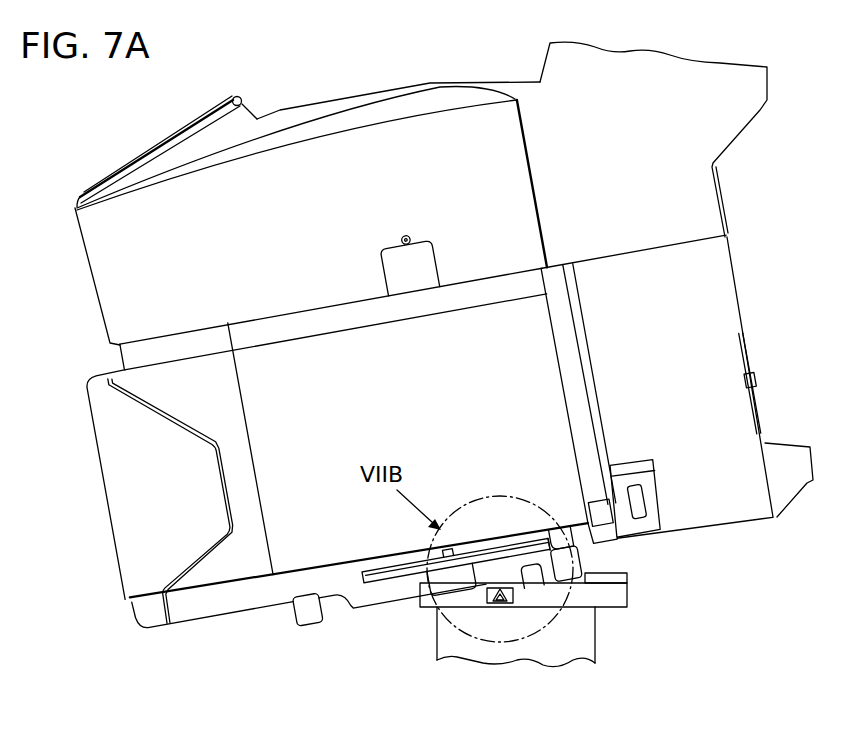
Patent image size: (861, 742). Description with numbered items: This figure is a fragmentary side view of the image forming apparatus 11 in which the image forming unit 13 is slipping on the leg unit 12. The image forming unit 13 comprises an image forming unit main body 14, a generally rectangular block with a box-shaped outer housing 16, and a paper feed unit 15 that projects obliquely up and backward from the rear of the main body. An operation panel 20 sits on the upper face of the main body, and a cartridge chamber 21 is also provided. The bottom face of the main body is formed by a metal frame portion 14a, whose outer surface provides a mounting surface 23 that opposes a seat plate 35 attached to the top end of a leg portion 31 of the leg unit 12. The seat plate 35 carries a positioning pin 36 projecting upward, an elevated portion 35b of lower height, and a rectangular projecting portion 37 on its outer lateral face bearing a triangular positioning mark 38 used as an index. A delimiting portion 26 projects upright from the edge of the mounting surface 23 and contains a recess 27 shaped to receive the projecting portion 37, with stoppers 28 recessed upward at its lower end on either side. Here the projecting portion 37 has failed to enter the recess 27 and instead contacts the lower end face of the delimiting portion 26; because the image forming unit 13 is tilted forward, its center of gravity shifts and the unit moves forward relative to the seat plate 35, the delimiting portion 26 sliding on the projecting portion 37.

The image forming apparatus 11 is at (370, 83).
The leg unit 12 is at (605, 648).
The image forming unit 13 is at (745, 297).
The image forming unit main body 14 is at (118, 350).
The frame portion 14a is at (607, 540).
The paper feed unit 15 is at (747, 128).
The outer housing 16 is at (222, 572).
The operation panel 20 is at (150, 142).
The cartridge chamber 21 is at (107, 503).
The mounting surface 23 is at (573, 543).
The delimiting portion 26 is at (377, 612).
The recess 27 is at (427, 568).
The stopper 28 is at (330, 614).
The leg portion 31 is at (433, 648).
The seat plate 35 is at (627, 597).
The elevated portion 35b is at (627, 571).
The positioning pin 36 is at (513, 566).
The projecting portion 37 is at (490, 600).
The positioning mark 38 is at (502, 602).